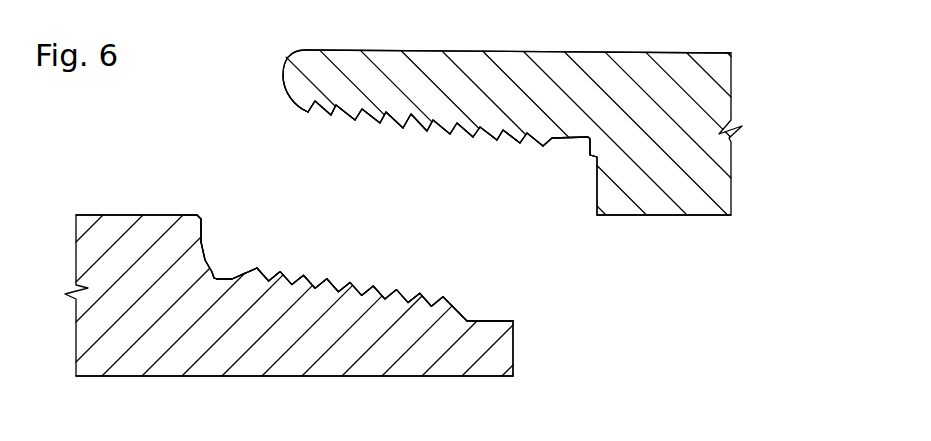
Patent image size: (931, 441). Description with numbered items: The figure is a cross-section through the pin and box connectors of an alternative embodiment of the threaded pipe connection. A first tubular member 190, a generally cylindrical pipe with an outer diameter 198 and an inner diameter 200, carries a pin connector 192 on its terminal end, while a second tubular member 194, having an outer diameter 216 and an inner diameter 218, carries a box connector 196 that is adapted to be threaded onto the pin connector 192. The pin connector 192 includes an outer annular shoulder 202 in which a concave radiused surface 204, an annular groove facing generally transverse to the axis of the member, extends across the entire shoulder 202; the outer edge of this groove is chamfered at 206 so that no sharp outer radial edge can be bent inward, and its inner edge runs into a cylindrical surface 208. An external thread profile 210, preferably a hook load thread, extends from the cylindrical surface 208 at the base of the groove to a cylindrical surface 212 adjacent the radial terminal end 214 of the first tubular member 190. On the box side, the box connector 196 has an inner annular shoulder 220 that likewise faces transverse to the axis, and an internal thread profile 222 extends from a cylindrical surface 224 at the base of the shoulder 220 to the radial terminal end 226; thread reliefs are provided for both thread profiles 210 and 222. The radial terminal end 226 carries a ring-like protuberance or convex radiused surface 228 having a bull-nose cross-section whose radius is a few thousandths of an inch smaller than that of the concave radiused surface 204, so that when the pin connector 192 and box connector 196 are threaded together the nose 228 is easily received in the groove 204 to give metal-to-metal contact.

The first tubular member 190 is at (170, 363).
The pin connector 192 is at (426, 277).
The second tubular member 194 is at (716, 187).
The box connector 196 is at (366, 146).
The outer diameter 198 is at (125, 214).
The inner diameter 200 is at (318, 377).
The outer annular shoulder 202 is at (226, 239).
The concave radiused surface 204 is at (203, 243).
The chamfer 206 is at (202, 215).
The cylindrical surface 208 is at (231, 278).
The external thread profile 210 is at (360, 296).
The cylindrical surface 212 is at (495, 321).
The radial terminal end 214 is at (515, 350).
The outer diameter 216 is at (616, 52).
The inner diameter 218 is at (670, 215).
The inner annular shoulder 220 is at (593, 194).
The internal thread profile 222 is at (403, 128).
The cylindrical surface 224 is at (578, 140).
The radial terminal end 226 is at (284, 57).
The convex radiused surface 228 is at (283, 74).